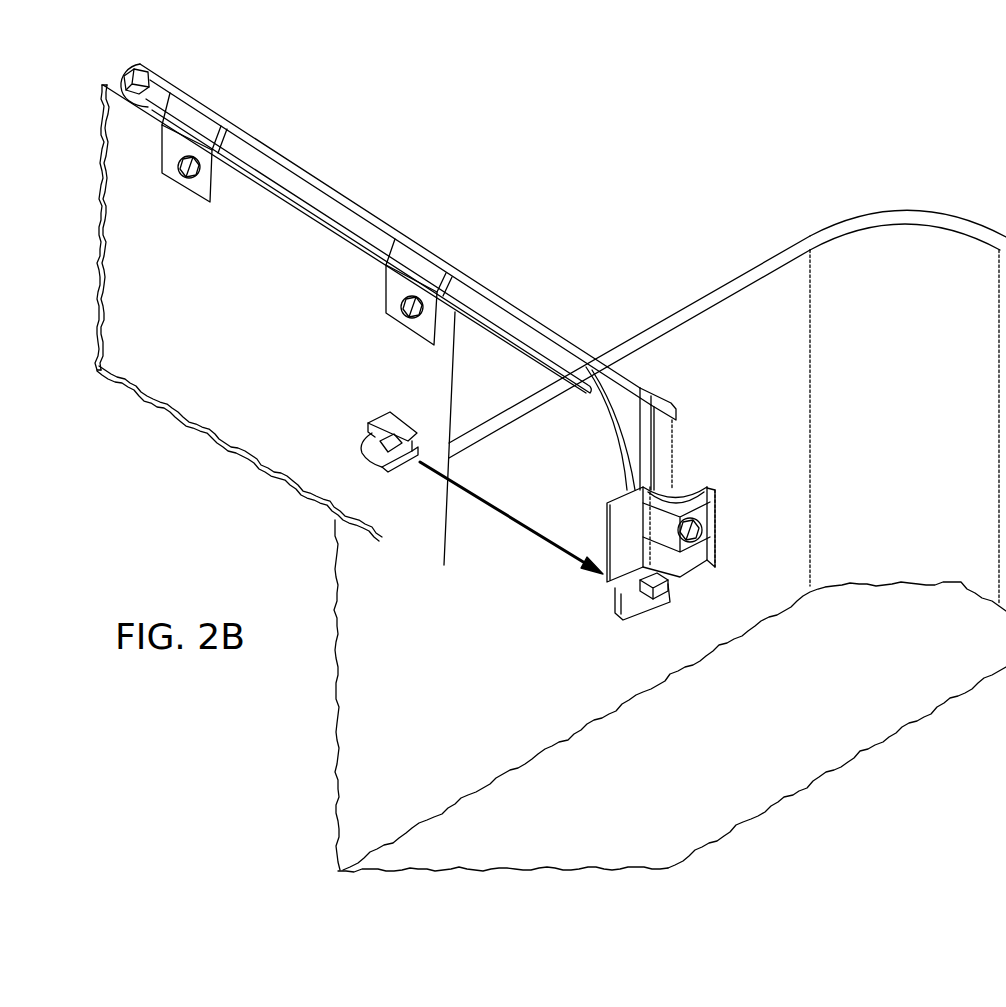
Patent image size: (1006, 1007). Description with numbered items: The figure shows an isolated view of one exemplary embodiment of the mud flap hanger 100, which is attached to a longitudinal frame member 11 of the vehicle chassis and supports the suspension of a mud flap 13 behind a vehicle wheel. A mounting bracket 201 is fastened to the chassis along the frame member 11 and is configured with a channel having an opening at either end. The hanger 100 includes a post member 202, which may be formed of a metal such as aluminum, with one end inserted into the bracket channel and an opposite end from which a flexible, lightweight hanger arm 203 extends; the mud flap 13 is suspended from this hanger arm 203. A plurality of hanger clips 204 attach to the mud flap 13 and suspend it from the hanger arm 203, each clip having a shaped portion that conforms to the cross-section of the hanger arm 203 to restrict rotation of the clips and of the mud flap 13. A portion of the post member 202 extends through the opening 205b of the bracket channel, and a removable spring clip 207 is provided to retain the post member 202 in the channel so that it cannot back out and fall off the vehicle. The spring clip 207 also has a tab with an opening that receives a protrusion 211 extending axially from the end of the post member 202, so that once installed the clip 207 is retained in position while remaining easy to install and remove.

The frame member 11 is at (918, 430).
The mud flap 13 is at (291, 342).
The mud flap hanger 100 is at (646, 507).
The mounting bracket 201 is at (700, 579).
The post member 202 is at (677, 448).
The hanger arm 203 is at (311, 173).
The hanger clip 204 is at (188, 113).
The channel opening 205b is at (611, 600).
The spring clip 207 is at (380, 418).
The protrusion 211 is at (644, 604).